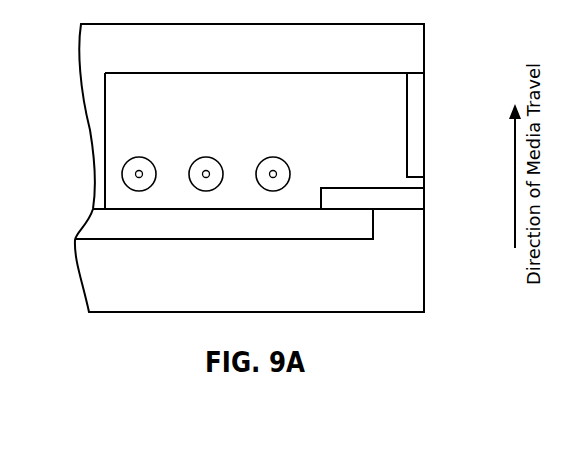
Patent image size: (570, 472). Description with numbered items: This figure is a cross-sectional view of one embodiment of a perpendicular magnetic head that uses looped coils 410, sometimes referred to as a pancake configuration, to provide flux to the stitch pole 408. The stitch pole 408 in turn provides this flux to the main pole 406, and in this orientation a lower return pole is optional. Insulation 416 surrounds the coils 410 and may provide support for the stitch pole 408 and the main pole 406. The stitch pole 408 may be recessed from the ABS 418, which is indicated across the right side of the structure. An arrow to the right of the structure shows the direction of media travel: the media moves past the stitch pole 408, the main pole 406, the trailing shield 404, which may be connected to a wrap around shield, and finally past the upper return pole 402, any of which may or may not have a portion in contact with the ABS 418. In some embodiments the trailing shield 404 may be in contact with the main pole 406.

The upper return pole 402 is at (252, 48).
The trailing shield 404 is at (424, 108).
The main pole 406 is at (424, 193).
The stitch pole 408 is at (224, 224).
The looped coils 410 is at (128, 162).
The insulation 416 is at (258, 141).
The ABS 418 is at (430, 40).